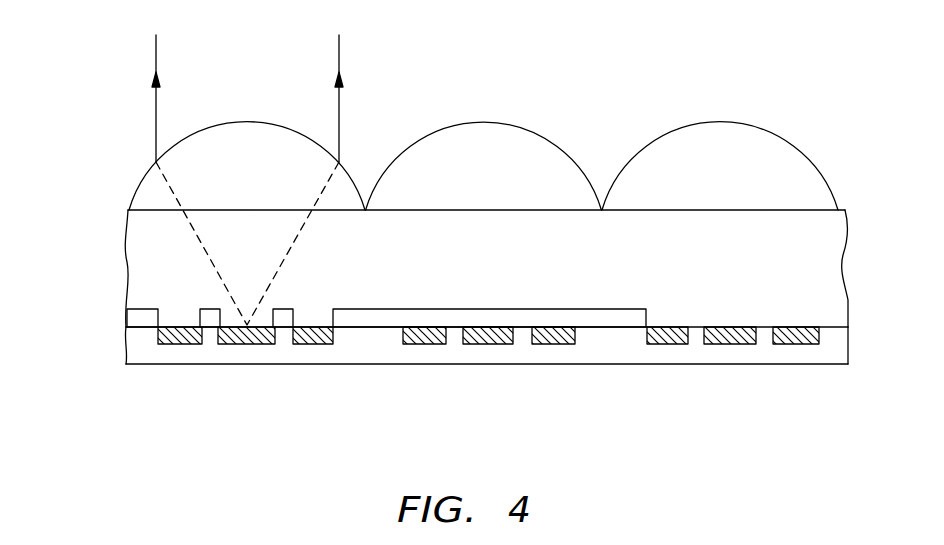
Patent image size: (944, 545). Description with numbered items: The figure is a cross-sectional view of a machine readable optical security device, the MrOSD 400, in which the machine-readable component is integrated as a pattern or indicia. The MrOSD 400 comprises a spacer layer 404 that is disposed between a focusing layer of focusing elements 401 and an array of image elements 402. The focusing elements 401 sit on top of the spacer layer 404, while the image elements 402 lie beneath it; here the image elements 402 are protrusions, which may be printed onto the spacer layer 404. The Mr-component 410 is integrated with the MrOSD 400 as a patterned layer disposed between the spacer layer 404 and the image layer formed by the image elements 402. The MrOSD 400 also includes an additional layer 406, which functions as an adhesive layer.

The MrOSD 400 is at (127, 118).
The focusing elements 401 is at (512, 122).
The image elements 402 is at (245, 345).
The spacer layer 404 is at (855, 278).
The additional layer 406 is at (122, 348).
The Mr-component 410 is at (143, 305).